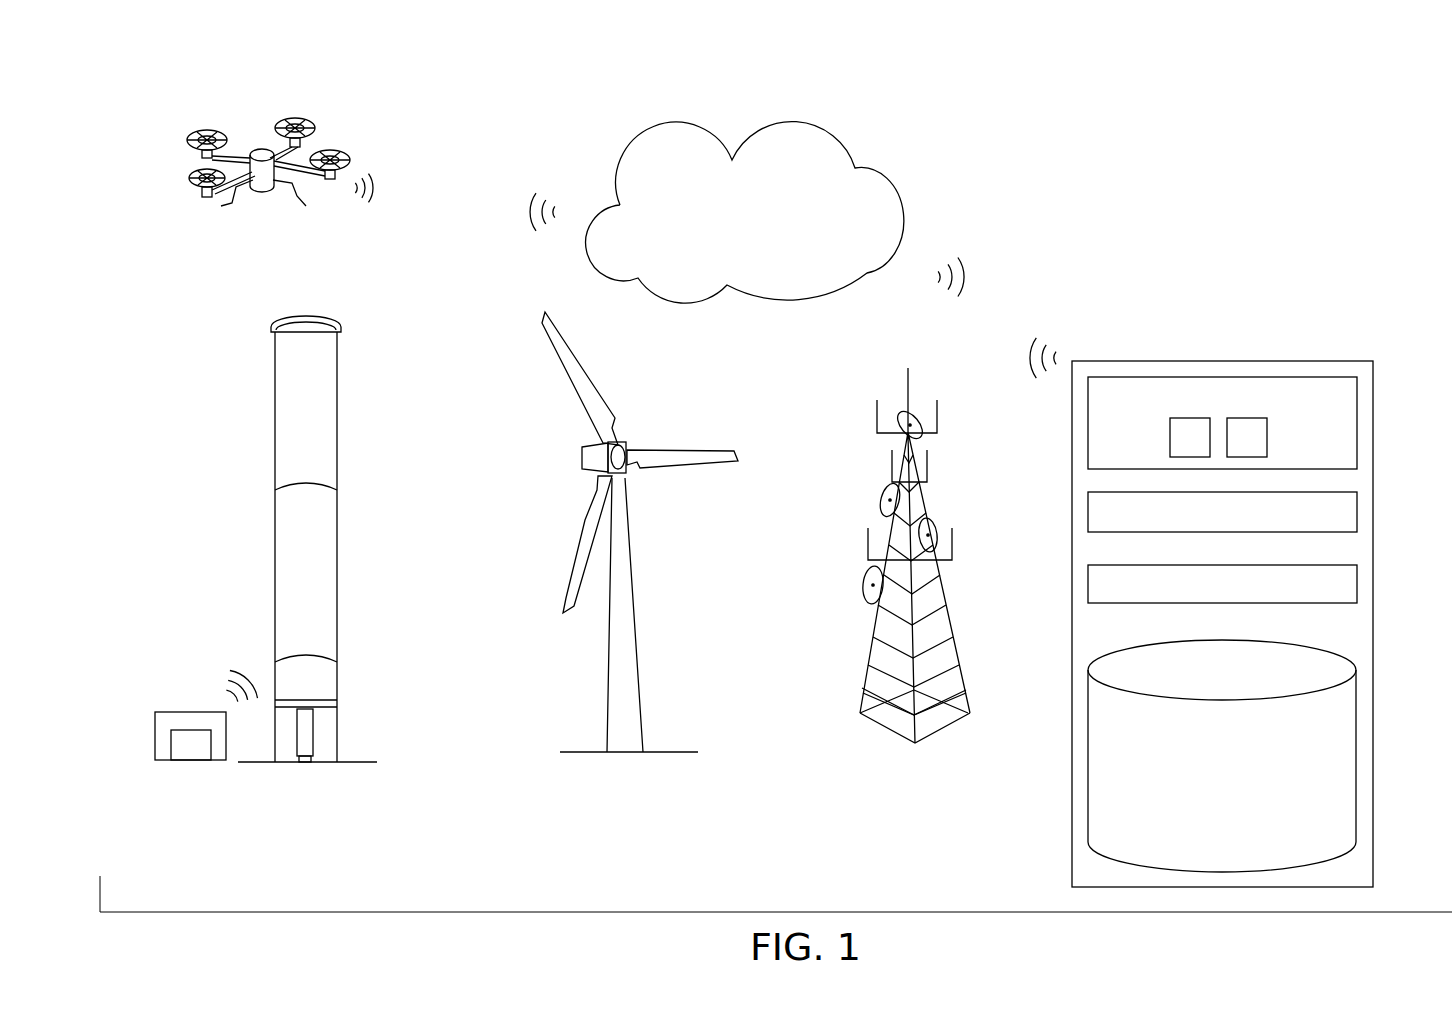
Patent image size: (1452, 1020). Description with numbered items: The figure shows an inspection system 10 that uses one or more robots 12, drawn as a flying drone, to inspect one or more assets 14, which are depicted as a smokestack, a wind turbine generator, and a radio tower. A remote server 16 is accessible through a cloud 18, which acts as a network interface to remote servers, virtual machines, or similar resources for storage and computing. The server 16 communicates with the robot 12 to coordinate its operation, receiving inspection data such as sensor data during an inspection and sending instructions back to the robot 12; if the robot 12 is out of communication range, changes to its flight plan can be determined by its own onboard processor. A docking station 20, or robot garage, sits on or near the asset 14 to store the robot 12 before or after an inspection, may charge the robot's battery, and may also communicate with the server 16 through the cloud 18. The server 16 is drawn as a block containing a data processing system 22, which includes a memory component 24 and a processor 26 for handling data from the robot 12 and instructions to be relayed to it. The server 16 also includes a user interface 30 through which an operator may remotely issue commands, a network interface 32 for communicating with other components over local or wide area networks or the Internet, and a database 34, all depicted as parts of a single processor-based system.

The inspection system 10 is at (1160, 88).
The robot 12 is at (330, 148).
The asset 14 is at (338, 446).
The remote server 16 is at (1220, 360).
The cloud 18 is at (769, 226).
The docking station 20 is at (189, 710).
The data processing system 22 is at (1358, 420).
The memory component 24 is at (1168, 435).
The processor 26 is at (1269, 434).
The user interface 30 is at (1358, 512).
The network interface 32 is at (1358, 586).
The database 34 is at (1358, 757).